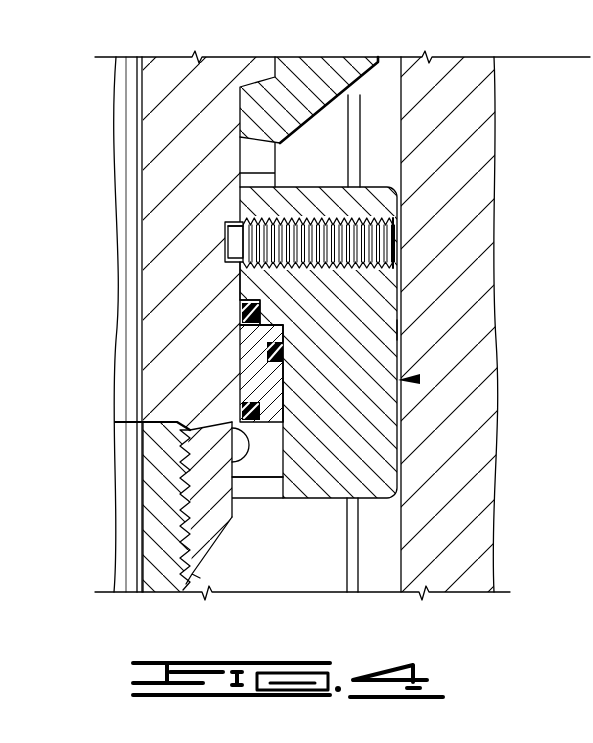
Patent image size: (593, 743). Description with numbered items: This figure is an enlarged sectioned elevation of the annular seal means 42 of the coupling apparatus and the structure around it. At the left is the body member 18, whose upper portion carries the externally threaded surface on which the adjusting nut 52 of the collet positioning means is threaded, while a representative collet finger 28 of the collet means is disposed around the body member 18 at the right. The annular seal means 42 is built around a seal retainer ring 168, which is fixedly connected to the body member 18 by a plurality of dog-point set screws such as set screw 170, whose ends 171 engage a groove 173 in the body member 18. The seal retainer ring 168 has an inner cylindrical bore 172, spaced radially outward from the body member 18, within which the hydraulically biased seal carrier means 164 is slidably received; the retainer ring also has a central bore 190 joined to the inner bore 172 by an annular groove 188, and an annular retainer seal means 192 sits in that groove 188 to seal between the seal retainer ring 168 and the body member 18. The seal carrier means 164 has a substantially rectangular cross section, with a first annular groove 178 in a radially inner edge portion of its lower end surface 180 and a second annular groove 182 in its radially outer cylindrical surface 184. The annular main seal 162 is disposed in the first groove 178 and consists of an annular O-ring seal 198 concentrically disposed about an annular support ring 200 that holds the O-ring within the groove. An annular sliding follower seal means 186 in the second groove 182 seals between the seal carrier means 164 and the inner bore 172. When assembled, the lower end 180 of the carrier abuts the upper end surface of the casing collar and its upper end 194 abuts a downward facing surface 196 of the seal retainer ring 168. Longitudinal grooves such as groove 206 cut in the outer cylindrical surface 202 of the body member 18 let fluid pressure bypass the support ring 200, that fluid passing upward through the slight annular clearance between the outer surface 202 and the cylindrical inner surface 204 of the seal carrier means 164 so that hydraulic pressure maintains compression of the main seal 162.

The body member 18 is at (217, 70).
The adjusting nut 52 is at (312, 82).
The collet finger 28 is at (470, 529).
The dog-point set screw 170 is at (243, 234).
The set screw end 171 is at (226, 228).
The groove 173 is at (270, 233).
The central bore 190 is at (226, 252).
The annular groove 188 is at (238, 296).
The annular retainer seal means 192 is at (241, 310).
The second annular groove 182 is at (246, 316).
The first annular groove 178 is at (262, 380).
The cylindrical inner surface 204 is at (270, 350).
The longitudinal groove 206 is at (238, 398).
The annular main seal 162 is at (177, 424).
The annular support ring 200 is at (177, 424).
The outer cylindrical surface 202 is at (228, 446).
The inner cylindrical bore 172 is at (281, 514).
The annular O-ring seal 198 is at (284, 446).
The upper end 194 is at (262, 314).
The downward facing surface 196 is at (296, 334).
The seal retainer ring 168 is at (284, 346).
The radially outer cylindrical surface 184 is at (380, 331).
The annular sliding follower seal means 186 is at (284, 358).
The annular seal means 42 is at (420, 378).
The hydraulically biased seal carrier means 164 is at (292, 388).
The lower end surface 180 is at (250, 444).